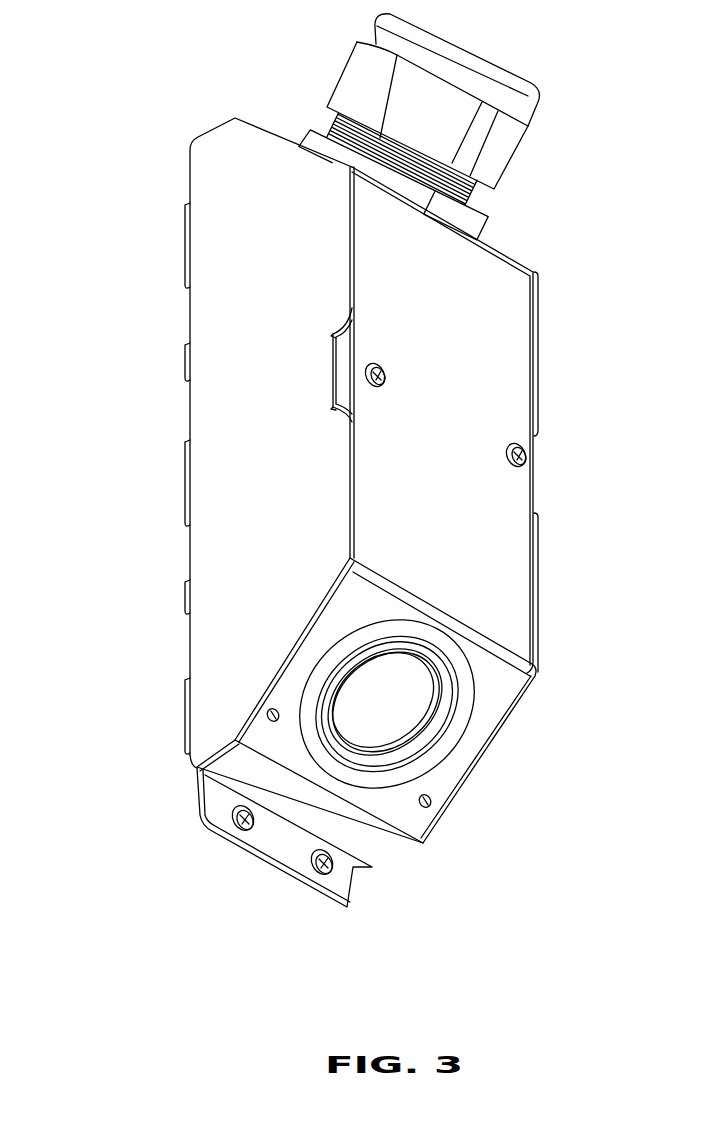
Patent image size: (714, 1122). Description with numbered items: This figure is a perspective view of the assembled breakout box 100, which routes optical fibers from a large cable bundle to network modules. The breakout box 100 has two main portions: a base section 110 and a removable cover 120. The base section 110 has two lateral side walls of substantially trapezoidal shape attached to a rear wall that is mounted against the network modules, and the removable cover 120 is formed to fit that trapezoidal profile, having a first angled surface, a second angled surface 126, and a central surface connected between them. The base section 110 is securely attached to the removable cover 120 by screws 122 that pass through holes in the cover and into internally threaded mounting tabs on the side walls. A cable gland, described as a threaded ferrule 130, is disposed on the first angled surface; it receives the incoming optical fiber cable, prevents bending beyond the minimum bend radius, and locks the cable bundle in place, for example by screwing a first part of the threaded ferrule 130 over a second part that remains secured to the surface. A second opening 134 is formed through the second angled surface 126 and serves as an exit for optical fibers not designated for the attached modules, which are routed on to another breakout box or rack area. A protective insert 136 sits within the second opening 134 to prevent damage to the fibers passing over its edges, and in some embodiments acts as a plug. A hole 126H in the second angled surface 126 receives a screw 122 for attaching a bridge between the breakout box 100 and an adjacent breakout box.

The breakout box 100 is at (147, 104).
The base section 110 is at (215, 325).
The removable cover 120 is at (513, 328).
The screws 122 is at (528, 458).
The second angled surface 126 is at (495, 678).
The hole 126H is at (430, 812).
The threaded ferrule 130 is at (535, 92).
The second opening 134 is at (412, 697).
The protective insert 136 is at (445, 757).